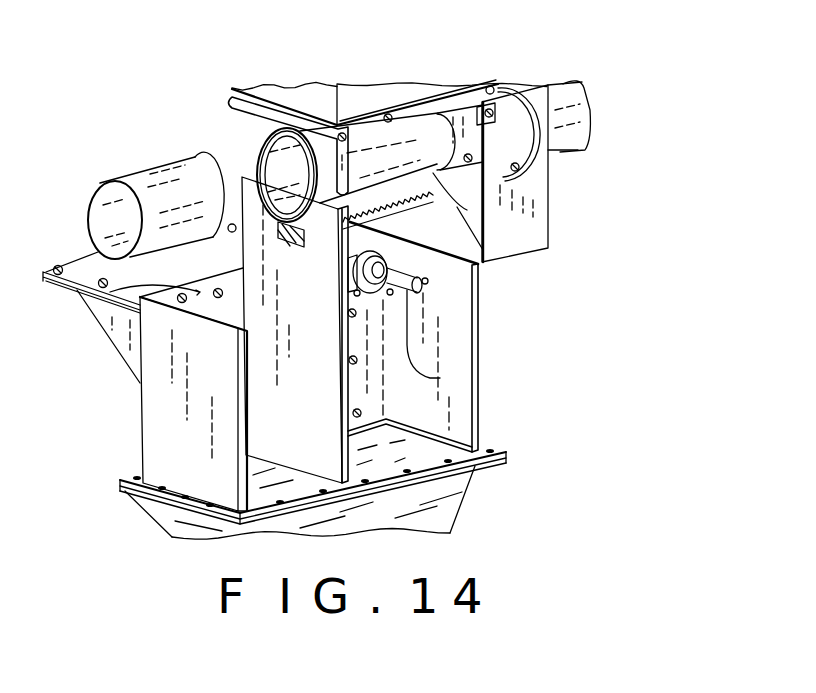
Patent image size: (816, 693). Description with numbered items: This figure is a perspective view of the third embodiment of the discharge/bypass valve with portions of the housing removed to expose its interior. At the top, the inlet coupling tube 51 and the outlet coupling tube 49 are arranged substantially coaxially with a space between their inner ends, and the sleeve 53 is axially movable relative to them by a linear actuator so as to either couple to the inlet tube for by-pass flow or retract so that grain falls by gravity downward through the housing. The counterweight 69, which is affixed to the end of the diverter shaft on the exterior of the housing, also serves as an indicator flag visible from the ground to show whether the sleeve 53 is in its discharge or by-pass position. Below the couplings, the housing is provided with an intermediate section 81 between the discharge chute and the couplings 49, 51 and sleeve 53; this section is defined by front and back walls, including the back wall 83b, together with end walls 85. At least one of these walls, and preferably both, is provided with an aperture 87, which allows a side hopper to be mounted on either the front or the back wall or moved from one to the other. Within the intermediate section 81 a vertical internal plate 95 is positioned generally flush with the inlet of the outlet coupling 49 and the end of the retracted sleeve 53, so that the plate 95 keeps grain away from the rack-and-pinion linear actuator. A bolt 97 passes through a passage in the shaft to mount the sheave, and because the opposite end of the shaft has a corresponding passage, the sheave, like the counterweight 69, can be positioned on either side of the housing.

The outlet coupling tube 49 is at (552, 150).
The inlet coupling tube 51 is at (140, 183).
The sleeve 53 is at (467, 210).
The counterweight 69 is at (366, 155).
The intermediate section 81 is at (485, 328).
The back wall 83b is at (108, 303).
The end walls 85 is at (160, 426).
The aperture 87 is at (220, 308).
The vertical internal plate 95 is at (316, 397).
The bolt 97 is at (430, 288).